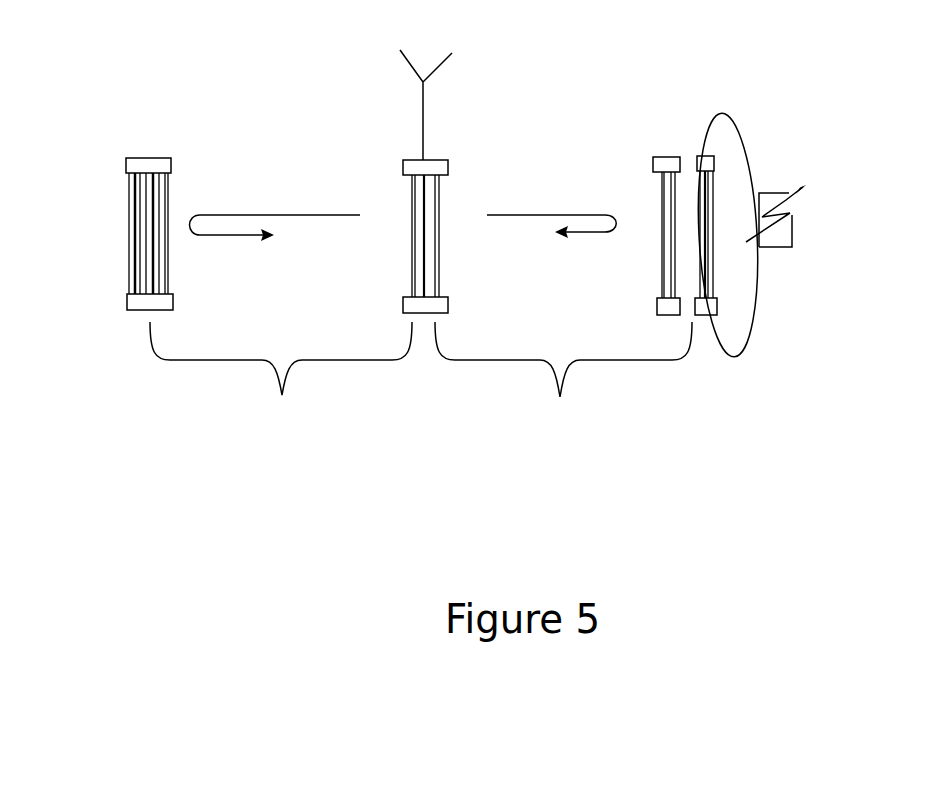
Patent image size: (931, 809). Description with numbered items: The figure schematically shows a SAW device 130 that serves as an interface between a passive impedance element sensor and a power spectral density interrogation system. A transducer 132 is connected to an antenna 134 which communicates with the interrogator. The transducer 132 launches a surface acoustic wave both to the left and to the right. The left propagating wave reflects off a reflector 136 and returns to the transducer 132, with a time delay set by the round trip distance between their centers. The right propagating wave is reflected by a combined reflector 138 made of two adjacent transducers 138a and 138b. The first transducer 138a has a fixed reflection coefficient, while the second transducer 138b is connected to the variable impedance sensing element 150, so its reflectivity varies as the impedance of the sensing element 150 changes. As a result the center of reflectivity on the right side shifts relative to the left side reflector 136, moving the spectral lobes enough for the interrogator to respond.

The SAW device 130 is at (289, 57).
The transducer 132 is at (443, 198).
The antenna 134 is at (450, 63).
The reflector 136 is at (122, 195).
The combined reflector 138 is at (679, 152).
The first transducer 138a is at (662, 272).
The second transducer 138b is at (720, 193).
The variable impedance sensing element 150 is at (782, 247).